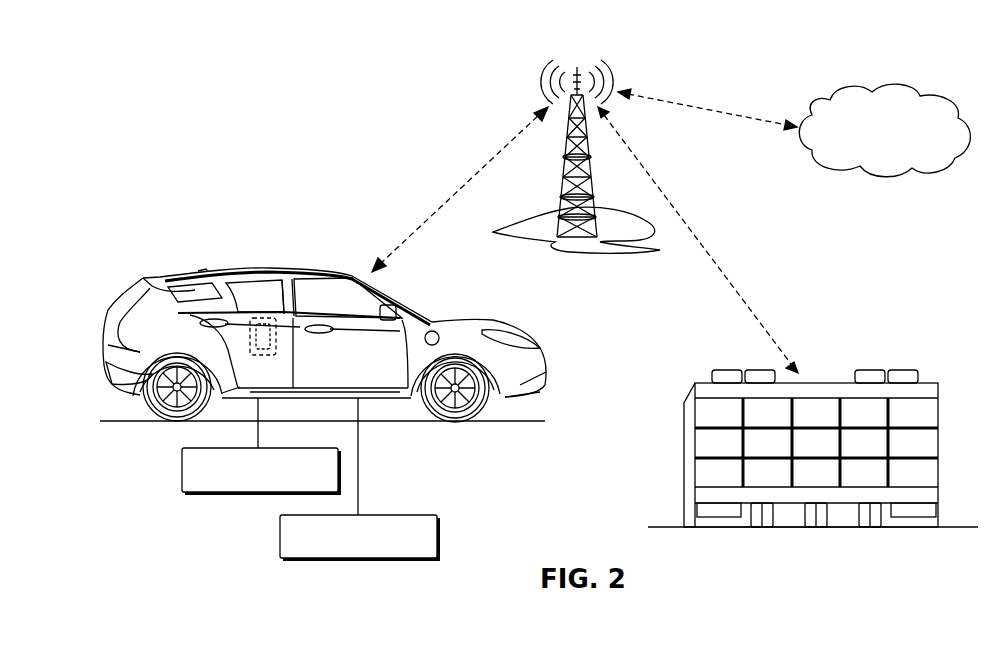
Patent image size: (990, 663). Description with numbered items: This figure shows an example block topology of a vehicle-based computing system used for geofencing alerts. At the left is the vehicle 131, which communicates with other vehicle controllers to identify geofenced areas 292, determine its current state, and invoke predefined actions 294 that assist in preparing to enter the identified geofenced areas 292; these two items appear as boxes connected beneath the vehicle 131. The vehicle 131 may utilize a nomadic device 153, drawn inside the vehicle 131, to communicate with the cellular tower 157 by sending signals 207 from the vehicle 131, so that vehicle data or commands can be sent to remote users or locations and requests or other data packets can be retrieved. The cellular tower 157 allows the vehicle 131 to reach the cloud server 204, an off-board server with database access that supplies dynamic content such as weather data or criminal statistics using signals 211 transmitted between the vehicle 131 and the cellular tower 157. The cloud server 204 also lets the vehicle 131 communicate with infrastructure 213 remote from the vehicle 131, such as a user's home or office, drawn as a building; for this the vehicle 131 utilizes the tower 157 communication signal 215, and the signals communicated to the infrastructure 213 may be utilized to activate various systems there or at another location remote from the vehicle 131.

The vehicle 131 is at (288, 268).
The nomadic device 153 is at (262, 316).
The cellular tower 157 is at (556, 168).
The cloud server 204 is at (888, 88).
The signals 207 is at (460, 185).
The signals 211 is at (706, 108).
The infrastructure 213 is at (830, 383).
The communication signal 215 is at (698, 236).
The geofenced areas 292 is at (182, 470).
The predefined actions 294 is at (280, 536).